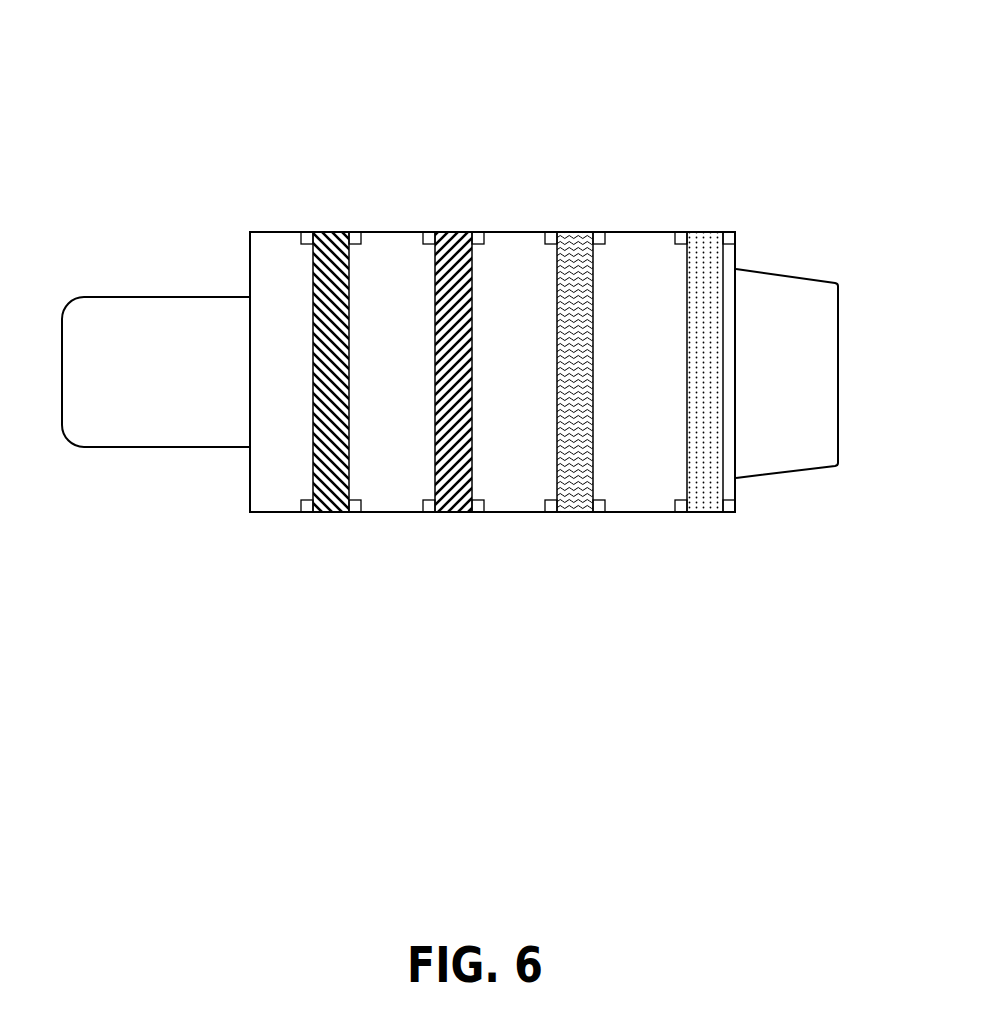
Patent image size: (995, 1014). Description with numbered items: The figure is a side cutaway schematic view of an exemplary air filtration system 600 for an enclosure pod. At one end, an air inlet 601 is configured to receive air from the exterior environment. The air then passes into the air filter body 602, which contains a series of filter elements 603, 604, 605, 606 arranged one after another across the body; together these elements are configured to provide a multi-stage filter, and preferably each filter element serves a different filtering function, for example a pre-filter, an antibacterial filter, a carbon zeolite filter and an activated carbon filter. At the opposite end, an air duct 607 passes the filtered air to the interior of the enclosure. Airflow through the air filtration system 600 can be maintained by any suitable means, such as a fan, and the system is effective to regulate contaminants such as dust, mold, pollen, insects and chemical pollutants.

The air filtration system 600 is at (495, 105).
The air inlet 601 is at (145, 299).
The air filter body 602 is at (284, 230).
The filter element 603 is at (332, 230).
The filter element 604 is at (453, 232).
The filter element 605 is at (572, 232).
The filter element 606 is at (705, 232).
The air duct 607 is at (785, 277).